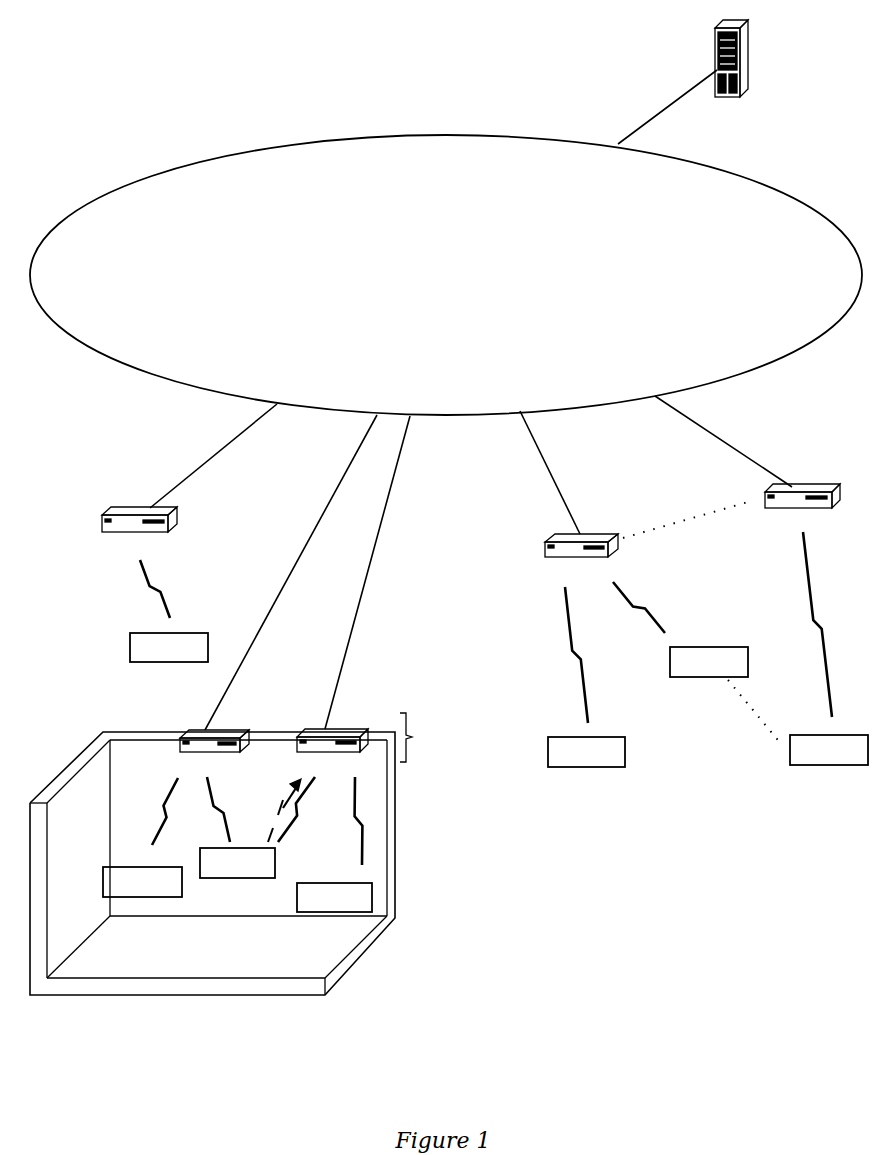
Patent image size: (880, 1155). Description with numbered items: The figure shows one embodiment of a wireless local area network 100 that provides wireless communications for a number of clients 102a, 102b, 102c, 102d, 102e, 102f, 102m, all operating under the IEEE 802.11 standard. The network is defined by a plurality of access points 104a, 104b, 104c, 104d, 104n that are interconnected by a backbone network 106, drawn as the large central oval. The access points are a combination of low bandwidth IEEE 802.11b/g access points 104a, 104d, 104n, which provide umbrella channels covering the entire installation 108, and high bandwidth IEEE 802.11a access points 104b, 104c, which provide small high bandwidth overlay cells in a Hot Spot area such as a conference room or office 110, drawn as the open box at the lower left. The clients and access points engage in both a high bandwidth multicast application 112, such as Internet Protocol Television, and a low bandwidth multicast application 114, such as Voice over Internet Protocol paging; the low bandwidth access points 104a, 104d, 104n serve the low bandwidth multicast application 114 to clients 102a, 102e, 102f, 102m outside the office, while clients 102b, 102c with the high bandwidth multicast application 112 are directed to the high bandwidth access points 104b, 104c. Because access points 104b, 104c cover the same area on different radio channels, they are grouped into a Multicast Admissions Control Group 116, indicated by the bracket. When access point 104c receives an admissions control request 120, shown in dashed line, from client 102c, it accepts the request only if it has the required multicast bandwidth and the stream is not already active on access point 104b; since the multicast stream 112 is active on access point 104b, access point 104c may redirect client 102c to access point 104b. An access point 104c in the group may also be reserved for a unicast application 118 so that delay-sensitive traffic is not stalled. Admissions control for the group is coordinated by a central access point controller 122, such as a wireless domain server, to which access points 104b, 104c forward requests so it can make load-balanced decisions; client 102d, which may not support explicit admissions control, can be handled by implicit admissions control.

The wireless local area network 100 is at (168, 124).
The client 102a is at (140, 664).
The client 102b is at (110, 897).
The client 102c is at (220, 878).
The client 102d is at (323, 914).
The client 102e is at (578, 768).
The client 102f is at (688, 678).
The client 102m is at (810, 767).
The access point 104a is at (175, 506).
The access point 104b is at (240, 730).
The access point 104c is at (355, 730).
The access point 104d is at (607, 532).
The access point 104n is at (817, 483).
The backbone network 106 is at (257, 147).
The installation 108 is at (645, 908).
The conference room or office 110 is at (362, 942).
The high bandwidth multicast application 112 is at (152, 830).
The low bandwidth multicast application 114 is at (150, 592).
The Multicast Admissions Control Group 116 is at (422, 737).
The unicast application 118 is at (292, 822).
The admissions control request 120 is at (283, 808).
The central access point controller 122 is at (715, 60).